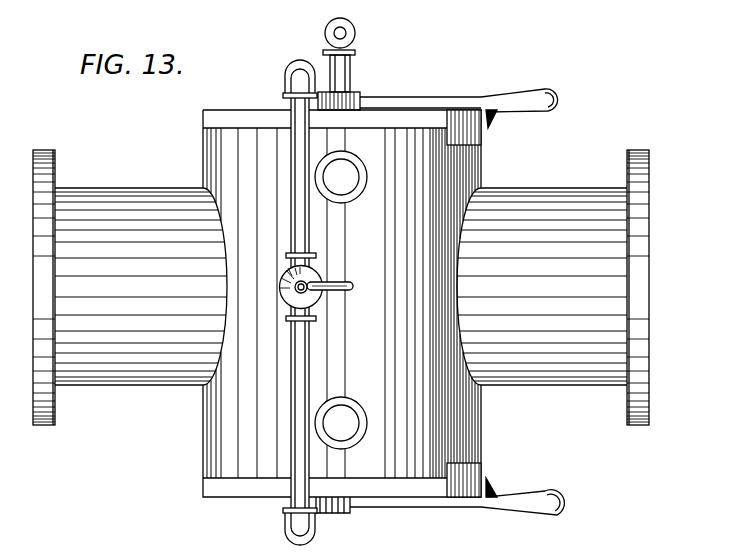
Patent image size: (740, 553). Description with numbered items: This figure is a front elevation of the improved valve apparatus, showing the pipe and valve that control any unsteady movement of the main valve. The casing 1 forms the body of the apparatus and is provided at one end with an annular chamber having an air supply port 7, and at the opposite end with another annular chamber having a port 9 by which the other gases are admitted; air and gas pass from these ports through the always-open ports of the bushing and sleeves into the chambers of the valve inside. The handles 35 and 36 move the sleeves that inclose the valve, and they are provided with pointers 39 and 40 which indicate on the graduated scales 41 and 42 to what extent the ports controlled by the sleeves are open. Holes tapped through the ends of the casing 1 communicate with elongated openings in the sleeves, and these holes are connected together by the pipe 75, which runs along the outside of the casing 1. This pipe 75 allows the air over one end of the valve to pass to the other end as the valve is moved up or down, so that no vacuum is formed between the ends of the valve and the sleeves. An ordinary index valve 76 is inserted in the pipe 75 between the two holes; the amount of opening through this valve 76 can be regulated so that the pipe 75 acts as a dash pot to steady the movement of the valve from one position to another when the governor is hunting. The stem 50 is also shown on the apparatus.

The casing 1 is at (203, 424).
The air supply port 7 is at (348, 432).
The gas port 9 is at (345, 168).
The handle 35 is at (558, 514).
The handle 36 is at (551, 92).
The pointer 39 is at (497, 490).
The pointer 40 is at (496, 116).
The graduated scale 41 is at (484, 465).
The graduated scale 42 is at (482, 144).
The stem with eye 50 is at (352, 72).
The pipe 75 is at (297, 195).
The index valve 76 is at (290, 270).